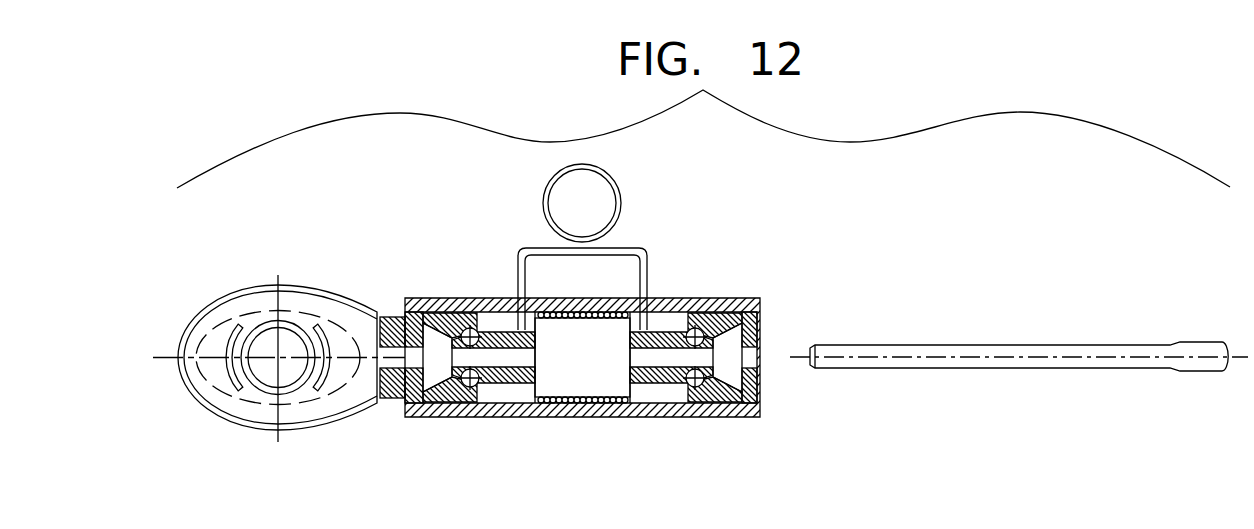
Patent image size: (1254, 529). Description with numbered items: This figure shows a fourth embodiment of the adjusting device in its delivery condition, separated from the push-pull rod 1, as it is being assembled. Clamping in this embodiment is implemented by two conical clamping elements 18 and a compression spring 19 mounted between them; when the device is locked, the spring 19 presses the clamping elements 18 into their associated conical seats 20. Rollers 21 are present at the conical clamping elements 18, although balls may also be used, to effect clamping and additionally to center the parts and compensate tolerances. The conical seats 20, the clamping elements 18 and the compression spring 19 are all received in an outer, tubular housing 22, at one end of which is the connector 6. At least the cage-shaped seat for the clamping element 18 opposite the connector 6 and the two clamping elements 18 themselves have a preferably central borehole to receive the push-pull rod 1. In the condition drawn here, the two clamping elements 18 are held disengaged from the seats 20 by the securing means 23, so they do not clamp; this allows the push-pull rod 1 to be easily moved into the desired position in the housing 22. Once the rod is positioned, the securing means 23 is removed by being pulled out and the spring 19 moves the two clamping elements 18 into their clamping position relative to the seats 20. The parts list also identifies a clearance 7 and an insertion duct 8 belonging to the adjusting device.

The push-pull rod 1 is at (1005, 350).
The connector 6 is at (250, 303).
The clearance 7 is at (278, 358).
The insertion duct 8 is at (713, 355).
The clamping element 18 is at (516, 313).
The compression spring 19 is at (662, 318).
The seat 20 is at (414, 300).
The roller 21 is at (468, 312).
The tubular housing 22 is at (498, 418).
The securing means 23 is at (590, 310).